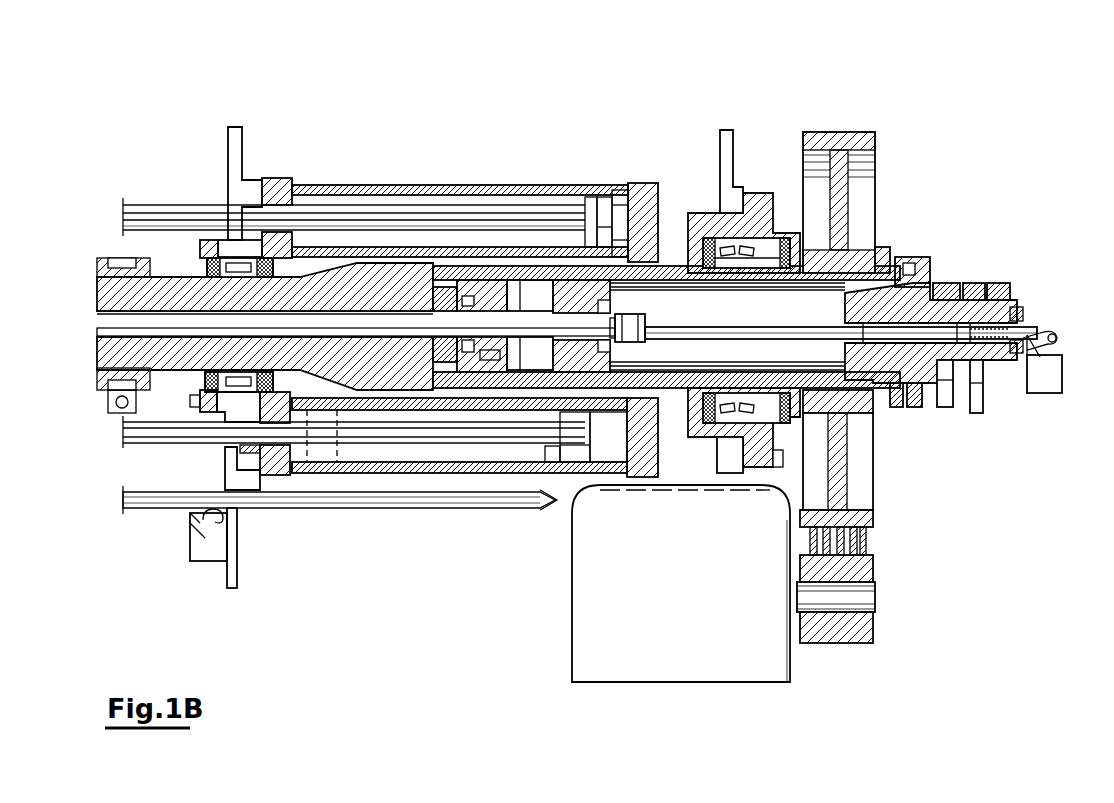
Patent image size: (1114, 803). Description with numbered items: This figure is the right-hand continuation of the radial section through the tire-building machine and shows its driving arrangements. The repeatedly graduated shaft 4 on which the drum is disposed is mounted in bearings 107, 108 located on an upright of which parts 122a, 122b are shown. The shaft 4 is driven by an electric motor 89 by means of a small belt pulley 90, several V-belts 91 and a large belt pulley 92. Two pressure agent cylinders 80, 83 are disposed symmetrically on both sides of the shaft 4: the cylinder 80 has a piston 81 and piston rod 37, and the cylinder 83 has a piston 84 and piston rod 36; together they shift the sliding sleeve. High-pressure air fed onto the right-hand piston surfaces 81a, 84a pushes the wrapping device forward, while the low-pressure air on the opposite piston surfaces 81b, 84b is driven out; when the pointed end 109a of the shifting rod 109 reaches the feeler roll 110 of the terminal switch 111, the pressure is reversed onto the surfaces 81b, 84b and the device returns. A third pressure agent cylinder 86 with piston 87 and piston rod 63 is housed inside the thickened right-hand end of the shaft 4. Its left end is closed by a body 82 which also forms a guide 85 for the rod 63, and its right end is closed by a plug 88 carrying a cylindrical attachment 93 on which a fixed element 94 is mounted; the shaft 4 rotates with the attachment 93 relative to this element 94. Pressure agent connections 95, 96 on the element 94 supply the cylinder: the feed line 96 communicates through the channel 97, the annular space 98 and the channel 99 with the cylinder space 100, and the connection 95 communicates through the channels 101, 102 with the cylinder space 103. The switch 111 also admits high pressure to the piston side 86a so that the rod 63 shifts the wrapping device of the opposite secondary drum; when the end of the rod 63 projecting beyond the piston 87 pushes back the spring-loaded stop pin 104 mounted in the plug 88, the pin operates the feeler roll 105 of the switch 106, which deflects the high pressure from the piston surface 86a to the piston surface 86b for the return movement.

The shaft 4 is at (158, 290).
The piston rod 36 is at (392, 436).
The piston rod 37 is at (275, 216).
The piston rod 63 is at (393, 322).
The pressure agent cylinder 80 is at (330, 187).
The piston 81 is at (601, 200).
The piston surface 81a is at (623, 207).
The piston surface 81b is at (582, 197).
The body 82 is at (473, 284).
The pressure agent cylinder 83 is at (333, 466).
The piston 84 is at (578, 452).
The piston surface 84a is at (605, 449).
The piston surface 84b is at (547, 458).
The guide 85 is at (500, 282).
The pressure agent cylinder 86 is at (714, 281).
The piston side 86a is at (550, 292).
The piston surface 86b is at (613, 356).
The piston 87 is at (660, 207).
The plug 88 is at (908, 277).
The electric motor 89 is at (662, 637).
The small belt pulley 90 is at (873, 567).
The V-belts 91 is at (847, 542).
The large belt pulley 92 is at (872, 192).
The cylindrical attachment 93 is at (985, 294).
The element 94 is at (980, 292).
The pressure agent connection 95 is at (947, 408).
The pressure agent feed line 96 is at (981, 413).
The channel 97 is at (960, 376).
The annular space 98 is at (780, 383).
The channel 99 is at (503, 352).
The cylinder space 100 is at (520, 371).
The channel 101 is at (947, 294).
The channel 102 is at (905, 408).
The cylinder space 103 is at (734, 343).
The stop pin 104 is at (933, 340).
The feeler roll 105 is at (1049, 333).
The switch 106 is at (1052, 380).
The bearing 107 is at (233, 262).
The bearing 108 is at (752, 197).
The shifting rod 109 is at (282, 507).
The pointed end 109a is at (537, 472).
The feeler roll 110 is at (215, 524).
The switch 111 is at (196, 556).
The upright part 122a is at (727, 145).
The upright part 122b is at (232, 590).